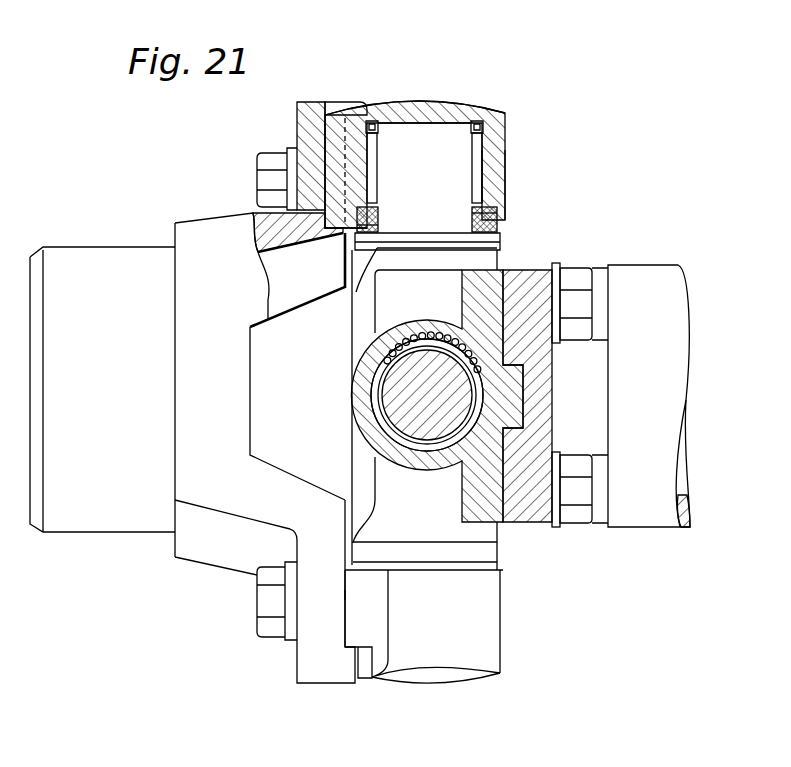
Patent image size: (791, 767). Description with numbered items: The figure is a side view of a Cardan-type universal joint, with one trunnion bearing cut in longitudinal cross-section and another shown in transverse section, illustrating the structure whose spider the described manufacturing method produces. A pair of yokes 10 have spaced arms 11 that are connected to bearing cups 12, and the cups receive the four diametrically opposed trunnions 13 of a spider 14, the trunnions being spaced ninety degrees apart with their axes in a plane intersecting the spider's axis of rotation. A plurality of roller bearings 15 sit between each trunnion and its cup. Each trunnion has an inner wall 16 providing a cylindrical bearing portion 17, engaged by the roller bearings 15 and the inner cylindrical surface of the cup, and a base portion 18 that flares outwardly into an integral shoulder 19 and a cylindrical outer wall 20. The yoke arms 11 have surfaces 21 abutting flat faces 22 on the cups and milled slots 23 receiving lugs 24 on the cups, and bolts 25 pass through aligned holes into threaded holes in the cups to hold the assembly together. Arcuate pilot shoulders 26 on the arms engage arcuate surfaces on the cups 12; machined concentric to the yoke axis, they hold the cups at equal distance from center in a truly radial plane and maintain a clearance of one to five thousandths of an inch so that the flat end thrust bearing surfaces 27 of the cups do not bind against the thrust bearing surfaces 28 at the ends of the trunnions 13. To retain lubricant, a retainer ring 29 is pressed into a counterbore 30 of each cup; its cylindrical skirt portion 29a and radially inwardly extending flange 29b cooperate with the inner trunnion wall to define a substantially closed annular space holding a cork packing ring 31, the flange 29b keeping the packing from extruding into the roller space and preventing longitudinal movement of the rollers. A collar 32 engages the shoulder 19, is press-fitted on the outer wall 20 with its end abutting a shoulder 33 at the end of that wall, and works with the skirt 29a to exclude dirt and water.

The yoke 10 is at (185, 343).
The yoke arm 11 is at (297, 103).
The bearing cup 12 is at (505, 116).
The trunnion 13 is at (476, 163).
The spider 14 is at (372, 468).
The roller bearings 15 is at (482, 143).
The inner wall 16 is at (406, 160).
The cylindrical bearing portion 17 is at (500, 180).
The base portion 18 is at (424, 247).
The shoulder 19 is at (500, 240).
The cylindrical outer wall 20 is at (418, 265).
The abutment surface 21 is at (346, 627).
The flat face 22 is at (347, 593).
The milled slot 23 is at (337, 101).
The lug 24 is at (325, 133).
The bolt 25 is at (263, 163).
The arcuate pilot shoulder 26 is at (352, 650).
The flat end thrust bearing surface 27 is at (440, 129).
The thrust bearing surface 28 is at (407, 120).
The retainer ring 29 is at (498, 216).
The cylindrical skirt portion 29a is at (352, 269).
The radially inwardly extending flange 29b is at (500, 210).
The counterbore 30 is at (365, 206).
The packing ring 31 is at (374, 227).
The collar 32 is at (341, 251).
The shoulder 33 is at (366, 266).